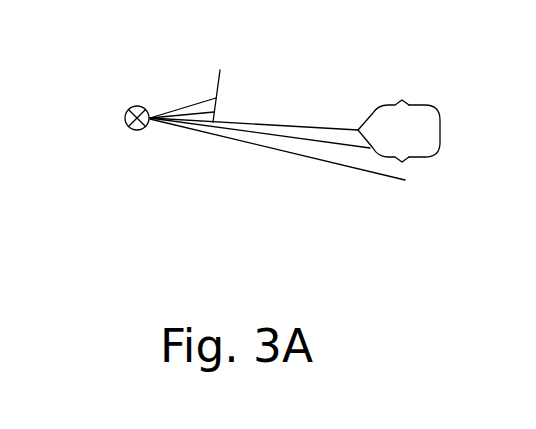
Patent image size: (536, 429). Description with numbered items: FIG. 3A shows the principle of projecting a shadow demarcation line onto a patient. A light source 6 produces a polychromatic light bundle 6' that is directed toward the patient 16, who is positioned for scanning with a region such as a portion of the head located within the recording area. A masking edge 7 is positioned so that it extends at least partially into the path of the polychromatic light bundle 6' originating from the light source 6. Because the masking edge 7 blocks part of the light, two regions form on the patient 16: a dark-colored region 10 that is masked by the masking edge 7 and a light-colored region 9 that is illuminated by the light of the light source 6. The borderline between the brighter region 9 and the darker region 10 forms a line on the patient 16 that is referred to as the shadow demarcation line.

The light source 6 is at (92, 145).
The polychromatic light bundle 6' is at (168, 65).
The masking edge 7 is at (217, 82).
The light-colored region 9 is at (360, 152).
The dark-colored region 10 is at (367, 117).
The patient 16 is at (433, 157).